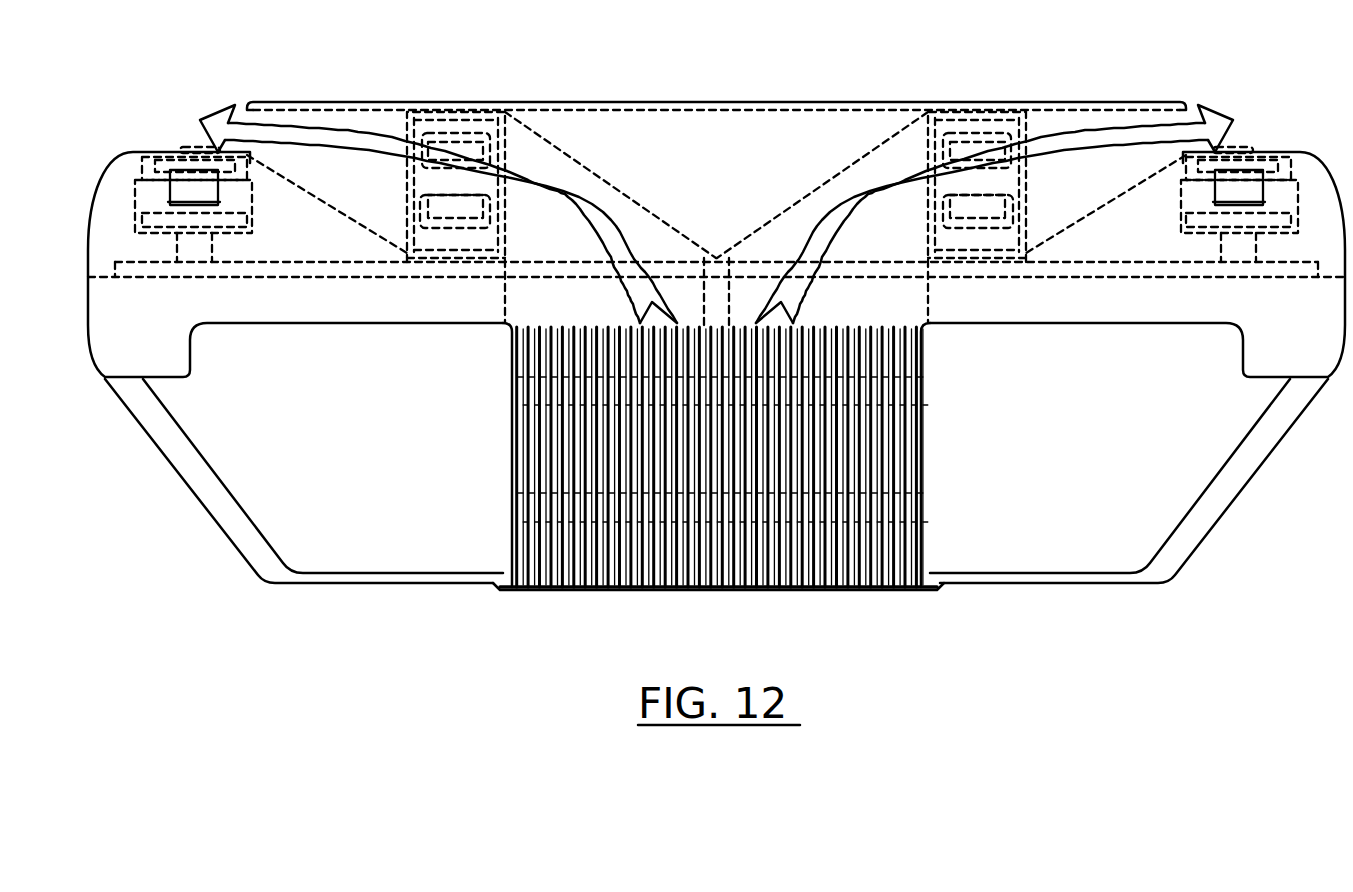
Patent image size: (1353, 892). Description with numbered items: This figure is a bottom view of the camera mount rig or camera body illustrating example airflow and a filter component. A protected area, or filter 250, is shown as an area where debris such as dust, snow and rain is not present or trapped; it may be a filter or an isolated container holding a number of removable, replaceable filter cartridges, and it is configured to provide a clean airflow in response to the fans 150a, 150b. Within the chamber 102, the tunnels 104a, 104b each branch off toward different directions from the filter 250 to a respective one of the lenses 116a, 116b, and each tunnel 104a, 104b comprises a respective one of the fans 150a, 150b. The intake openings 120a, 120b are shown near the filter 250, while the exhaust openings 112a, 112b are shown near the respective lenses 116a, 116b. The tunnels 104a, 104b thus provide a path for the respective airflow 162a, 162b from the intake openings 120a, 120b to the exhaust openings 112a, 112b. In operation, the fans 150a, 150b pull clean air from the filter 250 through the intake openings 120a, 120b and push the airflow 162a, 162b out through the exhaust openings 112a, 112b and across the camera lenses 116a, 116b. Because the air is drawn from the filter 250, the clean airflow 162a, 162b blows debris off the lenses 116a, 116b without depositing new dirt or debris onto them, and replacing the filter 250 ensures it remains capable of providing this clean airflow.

The chamber 102 is at (711, 100).
The tunnel 104a is at (806, 197).
The tunnel 104b is at (628, 197).
The exhaust opening 112a is at (1196, 120).
The exhaust opening 112b is at (237, 120).
The camera lens 116a is at (1283, 126).
The camera lens 116b is at (182, 148).
The intake opening 120a is at (818, 325).
The intake opening 120b is at (620, 325).
The fan 150a is at (978, 115).
The fan 150b is at (455, 115).
The airflow 162a is at (1110, 129).
The airflow 162b is at (323, 129).
The filter 250 is at (597, 591).